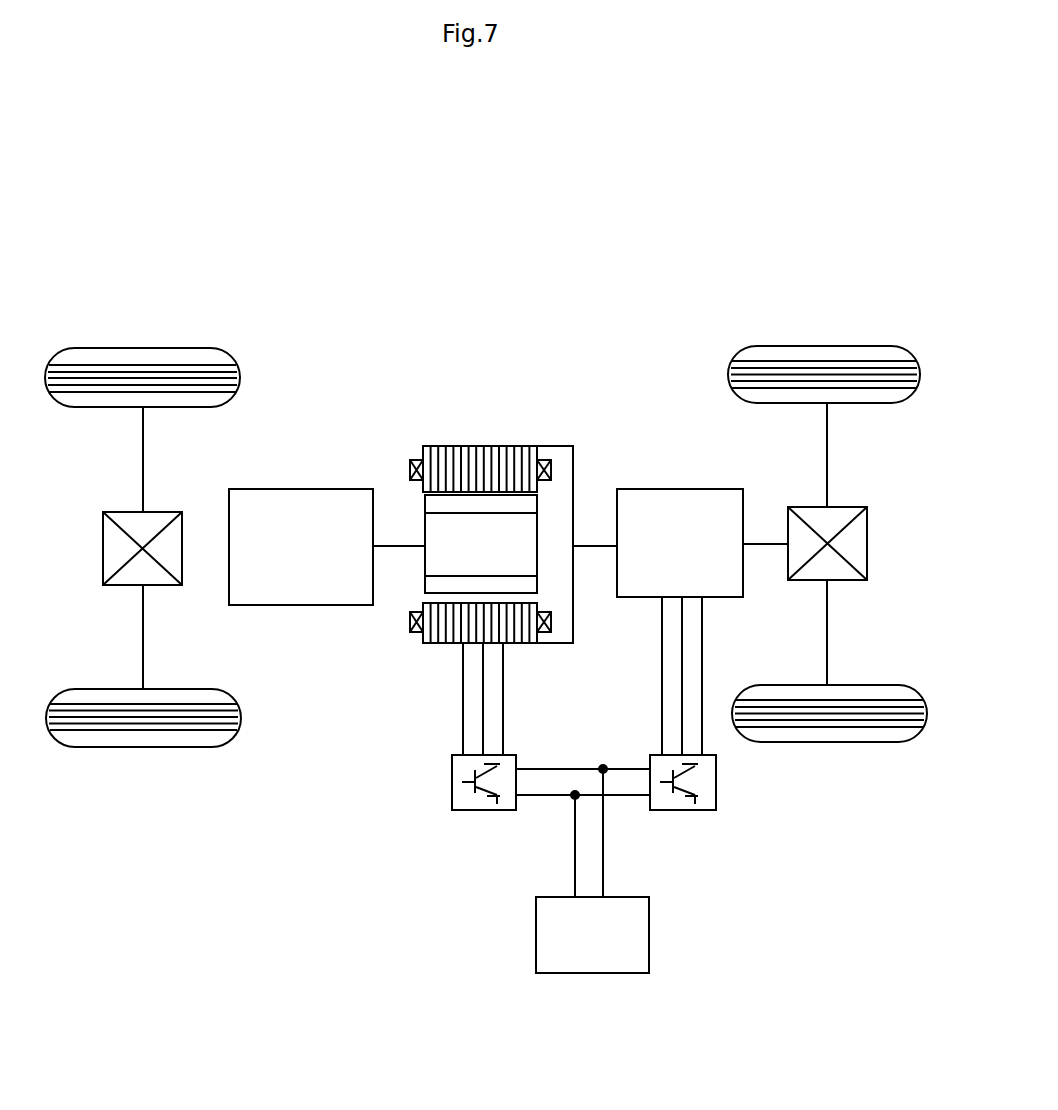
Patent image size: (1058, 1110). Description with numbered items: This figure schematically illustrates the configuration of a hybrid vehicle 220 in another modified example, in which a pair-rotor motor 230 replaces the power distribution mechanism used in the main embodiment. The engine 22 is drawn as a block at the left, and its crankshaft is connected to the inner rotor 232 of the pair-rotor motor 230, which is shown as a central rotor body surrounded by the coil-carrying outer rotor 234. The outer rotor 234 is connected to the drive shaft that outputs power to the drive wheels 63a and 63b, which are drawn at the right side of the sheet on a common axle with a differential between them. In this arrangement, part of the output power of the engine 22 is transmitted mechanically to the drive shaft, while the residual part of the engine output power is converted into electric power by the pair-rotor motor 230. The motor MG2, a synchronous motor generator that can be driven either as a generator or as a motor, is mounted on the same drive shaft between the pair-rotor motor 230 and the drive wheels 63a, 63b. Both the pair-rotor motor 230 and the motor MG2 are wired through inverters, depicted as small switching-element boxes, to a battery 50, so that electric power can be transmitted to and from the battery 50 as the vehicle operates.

The hybrid vehicle 220 is at (560, 220).
The engine 22 is at (303, 605).
The pair-rotor motor 230 is at (485, 292).
The inner rotor 232 is at (423, 528).
The outer rotor 234 is at (480, 448).
The motor MG2 is at (680, 489).
The drive wheel 63a is at (827, 346).
The drive wheel 63b is at (828, 742).
The battery 50 is at (649, 933).